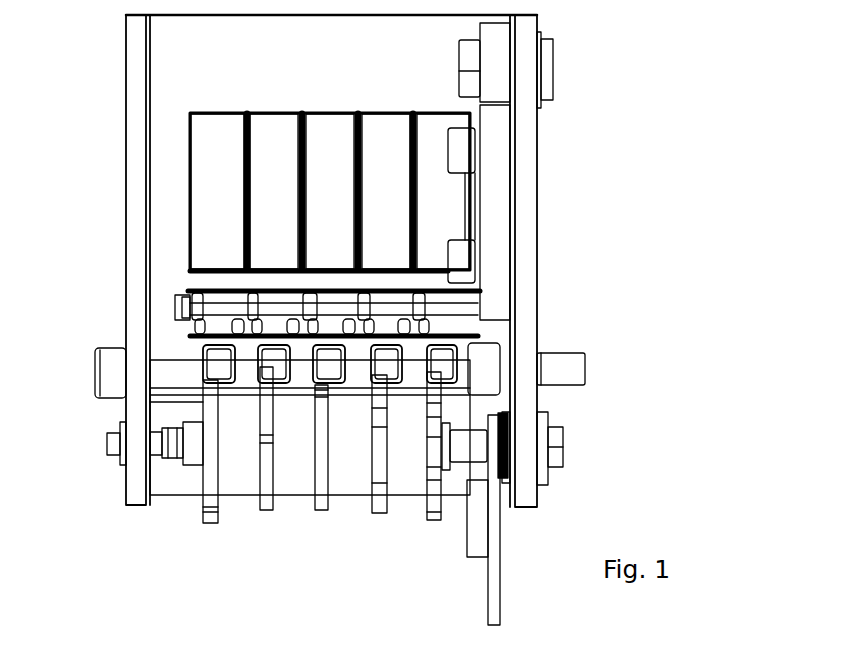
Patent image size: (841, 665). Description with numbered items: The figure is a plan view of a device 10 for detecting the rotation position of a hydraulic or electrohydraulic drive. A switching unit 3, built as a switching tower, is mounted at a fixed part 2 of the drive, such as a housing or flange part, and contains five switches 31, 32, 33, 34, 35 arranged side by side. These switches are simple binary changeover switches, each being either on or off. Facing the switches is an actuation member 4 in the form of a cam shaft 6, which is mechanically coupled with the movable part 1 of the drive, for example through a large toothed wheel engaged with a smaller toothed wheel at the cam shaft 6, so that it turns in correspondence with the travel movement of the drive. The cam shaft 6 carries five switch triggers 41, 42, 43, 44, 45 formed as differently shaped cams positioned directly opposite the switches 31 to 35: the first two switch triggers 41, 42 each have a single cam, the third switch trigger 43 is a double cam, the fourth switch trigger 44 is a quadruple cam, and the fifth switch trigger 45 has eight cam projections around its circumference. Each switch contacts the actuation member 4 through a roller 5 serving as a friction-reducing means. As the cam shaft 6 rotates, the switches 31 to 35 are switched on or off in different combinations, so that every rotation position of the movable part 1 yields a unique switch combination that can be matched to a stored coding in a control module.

The movable part 1 is at (500, 598).
The fixed part 2 is at (139, 325).
The switching unit 3 is at (267, 191).
The actuation member 4 is at (302, 473).
The roller 5 is at (443, 367).
The cam shaft 6 is at (212, 492).
The device 10 is at (545, 190).
The first switch 31 is at (224, 132).
The second switch 32 is at (280, 132).
The third switch 33 is at (331, 132).
The fourth switch 34 is at (388, 132).
The fifth switch 35 is at (432, 132).
The first switch trigger 41 is at (240, 450).
The second switch trigger 42 is at (267, 502).
The third switch trigger 43 is at (322, 502).
The fourth switch trigger 44 is at (382, 513).
The fifth switch trigger 45 is at (430, 523).